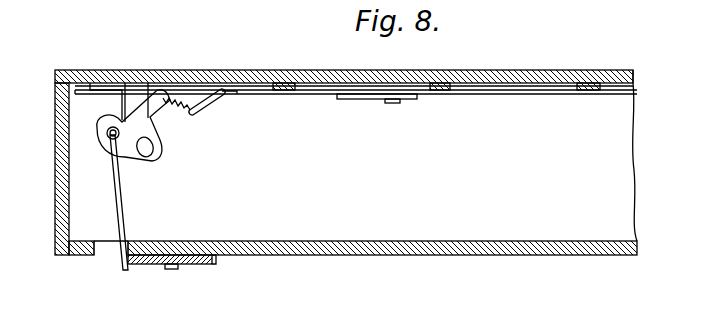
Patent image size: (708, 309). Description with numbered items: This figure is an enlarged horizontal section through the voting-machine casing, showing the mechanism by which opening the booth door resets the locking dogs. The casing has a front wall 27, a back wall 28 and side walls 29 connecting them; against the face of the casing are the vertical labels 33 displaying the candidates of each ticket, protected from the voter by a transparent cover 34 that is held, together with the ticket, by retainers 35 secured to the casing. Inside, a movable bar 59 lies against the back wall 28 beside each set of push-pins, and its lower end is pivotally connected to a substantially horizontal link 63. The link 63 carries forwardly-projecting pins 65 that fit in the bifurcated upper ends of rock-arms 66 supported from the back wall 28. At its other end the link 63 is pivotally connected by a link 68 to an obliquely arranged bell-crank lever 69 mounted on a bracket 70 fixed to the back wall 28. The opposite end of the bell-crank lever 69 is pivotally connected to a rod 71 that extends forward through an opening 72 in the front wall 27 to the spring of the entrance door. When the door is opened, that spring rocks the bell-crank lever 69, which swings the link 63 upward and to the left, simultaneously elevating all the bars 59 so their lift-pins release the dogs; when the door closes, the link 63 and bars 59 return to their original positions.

The front wall 27 is at (64, 256).
The back wall 28 is at (75, 72).
The side walls 29 is at (55, 163).
The vertical labels 33 is at (216, 260).
The cover 34 is at (200, 265).
The retainers 35 is at (172, 270).
The movable bar 59 is at (287, 91).
The link 63 is at (533, 96).
The forwardly-projecting pins 65 is at (390, 104).
The rock-arms 66 is at (370, 100).
The link 68 is at (215, 104).
The bell-crank lever 69 is at (171, 120).
The bracket 70 is at (122, 105).
The rod 71 is at (118, 202).
The opening 72 is at (109, 258).